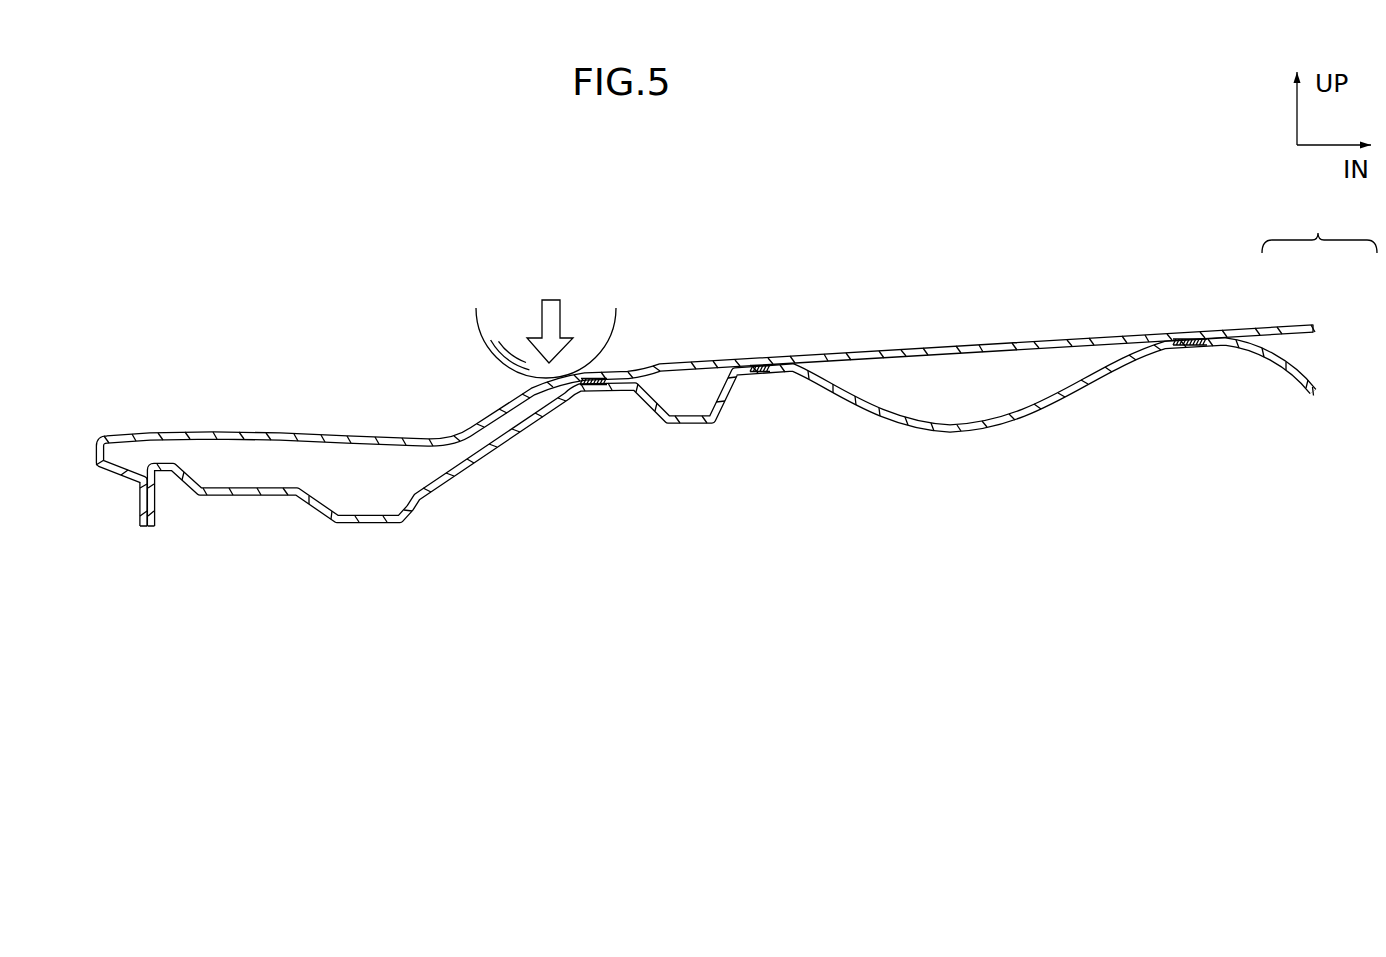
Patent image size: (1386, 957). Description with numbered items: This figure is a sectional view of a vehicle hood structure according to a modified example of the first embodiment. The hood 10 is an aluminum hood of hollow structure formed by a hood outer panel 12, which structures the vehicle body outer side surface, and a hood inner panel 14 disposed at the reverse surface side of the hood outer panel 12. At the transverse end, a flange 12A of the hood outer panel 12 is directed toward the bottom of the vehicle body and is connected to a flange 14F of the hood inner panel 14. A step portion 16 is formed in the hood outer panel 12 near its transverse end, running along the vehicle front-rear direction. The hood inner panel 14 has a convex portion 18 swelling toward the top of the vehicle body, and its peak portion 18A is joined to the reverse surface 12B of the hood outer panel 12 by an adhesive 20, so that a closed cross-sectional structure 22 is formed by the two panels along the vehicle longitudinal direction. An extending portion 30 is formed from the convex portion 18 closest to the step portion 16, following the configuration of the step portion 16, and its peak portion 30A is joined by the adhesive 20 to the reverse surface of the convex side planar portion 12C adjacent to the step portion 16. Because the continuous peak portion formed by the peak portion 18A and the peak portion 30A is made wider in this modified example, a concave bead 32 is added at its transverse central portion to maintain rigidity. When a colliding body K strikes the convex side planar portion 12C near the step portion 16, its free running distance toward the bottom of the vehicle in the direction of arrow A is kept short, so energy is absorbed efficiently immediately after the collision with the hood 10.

The hood 10 is at (1319, 228).
The hood outer panel 12 is at (1249, 325).
The flange 12A is at (140, 500).
The reverse surface 12B is at (1047, 349).
The convex side planar portion 12C is at (583, 372).
The hood inner panel 14 is at (1298, 392).
The flange 14F is at (156, 509).
The step portion 16 is at (483, 416).
The convex portion 18 is at (747, 380).
The peak portion 18A is at (748, 382).
The adhesive 20 is at (603, 371).
The closed cross-sectional structure 22 is at (984, 397).
The extending portion 30 is at (572, 400).
The peak portion 30A is at (593, 392).
The concave bead 32 is at (687, 425).
The colliding body K is at (484, 343).
The arrow A is at (540, 323).